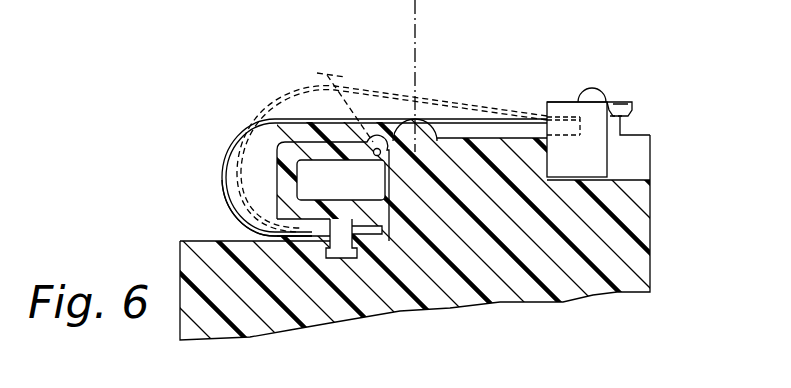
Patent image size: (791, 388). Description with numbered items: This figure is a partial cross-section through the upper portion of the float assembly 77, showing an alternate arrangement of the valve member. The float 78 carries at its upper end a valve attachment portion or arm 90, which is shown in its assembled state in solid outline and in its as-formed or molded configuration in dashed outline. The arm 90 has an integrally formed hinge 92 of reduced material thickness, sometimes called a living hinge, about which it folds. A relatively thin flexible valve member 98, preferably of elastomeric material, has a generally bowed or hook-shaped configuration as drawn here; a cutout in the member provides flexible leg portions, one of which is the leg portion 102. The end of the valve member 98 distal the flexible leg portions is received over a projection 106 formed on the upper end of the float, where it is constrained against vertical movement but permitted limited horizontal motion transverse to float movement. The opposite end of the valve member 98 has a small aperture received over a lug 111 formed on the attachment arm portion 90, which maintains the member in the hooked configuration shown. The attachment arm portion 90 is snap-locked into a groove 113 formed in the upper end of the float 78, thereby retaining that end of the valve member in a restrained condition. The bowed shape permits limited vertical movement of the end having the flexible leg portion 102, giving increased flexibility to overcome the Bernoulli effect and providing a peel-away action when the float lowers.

The float assembly 77 is at (662, 139).
The float 78 is at (655, 226).
The valve attachment portion or arm 90 is at (285, 190).
The hinge 92 is at (382, 143).
The valve member 98 is at (327, 118).
The flexible leg portion 102 is at (243, 215).
The projection 106 is at (594, 92).
The lug 111 is at (310, 250).
The groove 113 is at (345, 259).